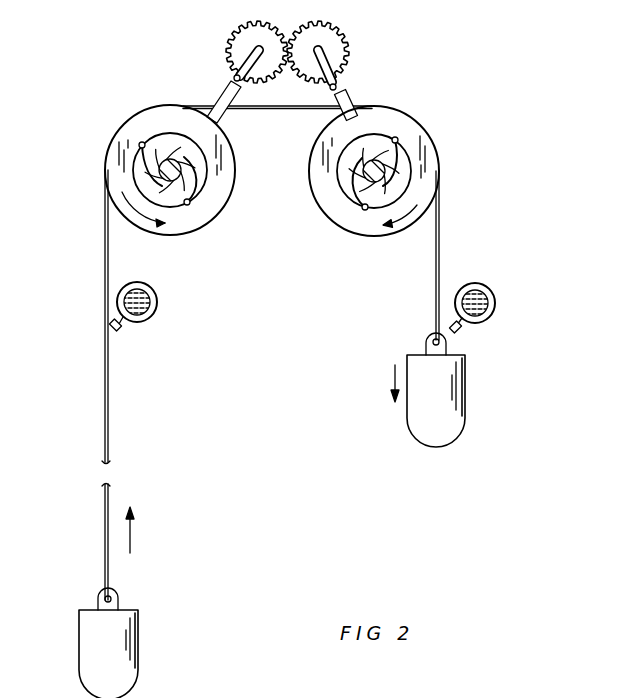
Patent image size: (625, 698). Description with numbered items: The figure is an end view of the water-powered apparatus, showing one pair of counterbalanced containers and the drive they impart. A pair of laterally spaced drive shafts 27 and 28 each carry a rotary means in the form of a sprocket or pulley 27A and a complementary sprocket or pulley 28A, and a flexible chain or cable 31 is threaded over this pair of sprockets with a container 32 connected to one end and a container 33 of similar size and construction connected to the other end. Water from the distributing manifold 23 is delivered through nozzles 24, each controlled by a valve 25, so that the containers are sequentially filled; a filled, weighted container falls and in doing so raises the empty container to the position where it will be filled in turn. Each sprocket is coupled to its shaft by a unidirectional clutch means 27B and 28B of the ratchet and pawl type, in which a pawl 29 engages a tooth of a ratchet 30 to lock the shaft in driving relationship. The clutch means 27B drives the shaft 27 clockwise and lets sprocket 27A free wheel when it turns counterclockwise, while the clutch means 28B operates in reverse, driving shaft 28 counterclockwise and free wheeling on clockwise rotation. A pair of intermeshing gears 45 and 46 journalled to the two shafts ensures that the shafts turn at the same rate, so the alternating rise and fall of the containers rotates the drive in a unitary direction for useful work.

The distributing manifold 23 is at (150, 300).
The nozzle 24 is at (455, 328).
The valve 25 is at (118, 329).
The drive shaft 27 is at (360, 200).
The sprocket or pulley 27A is at (363, 228).
The unidirectional clutch means 27B is at (395, 183).
The drive shaft 28 is at (150, 170).
The complementary rotary means 28A is at (120, 190).
The unidirectional clutch means 28B is at (142, 142).
The pawl 29 is at (365, 190).
The ratchet 30 is at (378, 150).
The chain or cable 31 is at (108, 420).
The container 32 is at (465, 418).
The container 33 is at (138, 643).
The intermeshing gear 45 is at (345, 50).
The intermeshing gear 46 is at (232, 38).